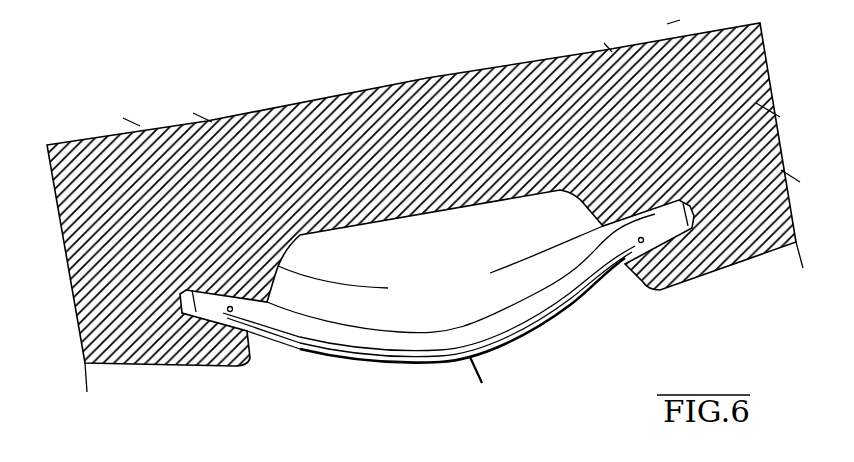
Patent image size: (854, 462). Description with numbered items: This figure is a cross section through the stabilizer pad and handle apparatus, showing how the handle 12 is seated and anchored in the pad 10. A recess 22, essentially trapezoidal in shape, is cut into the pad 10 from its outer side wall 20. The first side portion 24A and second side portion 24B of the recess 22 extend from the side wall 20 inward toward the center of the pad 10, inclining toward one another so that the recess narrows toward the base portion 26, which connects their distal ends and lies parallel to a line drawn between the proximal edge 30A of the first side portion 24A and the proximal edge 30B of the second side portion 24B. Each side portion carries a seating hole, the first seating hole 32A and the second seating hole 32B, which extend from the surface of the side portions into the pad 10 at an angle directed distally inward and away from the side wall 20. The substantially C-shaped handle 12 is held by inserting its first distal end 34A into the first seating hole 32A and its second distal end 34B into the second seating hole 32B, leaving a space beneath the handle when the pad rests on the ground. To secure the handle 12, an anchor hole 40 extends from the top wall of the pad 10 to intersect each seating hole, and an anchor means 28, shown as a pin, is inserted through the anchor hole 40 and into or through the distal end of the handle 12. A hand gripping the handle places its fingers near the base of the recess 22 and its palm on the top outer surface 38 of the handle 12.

The pad 10 is at (145, 98).
The handle 12 is at (478, 375).
The side wall 20 is at (123, 367).
The recess 22 is at (437, 312).
The first side portion 24A is at (353, 284).
The second side portion 24B is at (490, 274).
The base portion 26 is at (441, 213).
The anchor means (pin) 28 is at (228, 312).
The anchor hole 40 is at (645, 243).
The proximal edge of first side portion 30A is at (241, 333).
The proximal edge of second side portion 30B is at (624, 250).
The first seating hole 32A is at (305, 351).
The second seating hole 32B is at (742, 262).
The first distal end 34A is at (187, 318).
The second distal end 34B is at (644, 292).
The top outer surface 38 is at (401, 345).